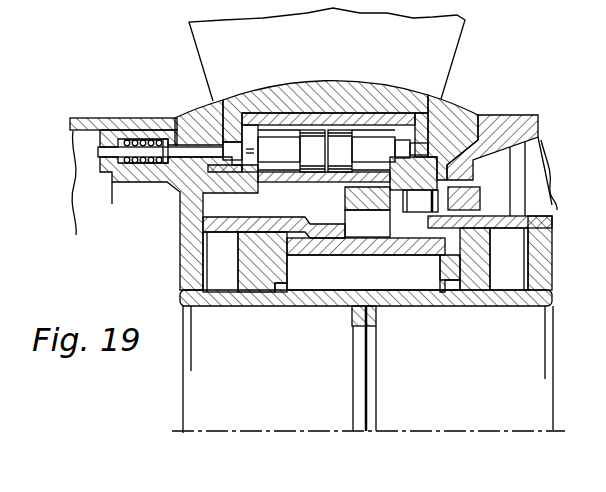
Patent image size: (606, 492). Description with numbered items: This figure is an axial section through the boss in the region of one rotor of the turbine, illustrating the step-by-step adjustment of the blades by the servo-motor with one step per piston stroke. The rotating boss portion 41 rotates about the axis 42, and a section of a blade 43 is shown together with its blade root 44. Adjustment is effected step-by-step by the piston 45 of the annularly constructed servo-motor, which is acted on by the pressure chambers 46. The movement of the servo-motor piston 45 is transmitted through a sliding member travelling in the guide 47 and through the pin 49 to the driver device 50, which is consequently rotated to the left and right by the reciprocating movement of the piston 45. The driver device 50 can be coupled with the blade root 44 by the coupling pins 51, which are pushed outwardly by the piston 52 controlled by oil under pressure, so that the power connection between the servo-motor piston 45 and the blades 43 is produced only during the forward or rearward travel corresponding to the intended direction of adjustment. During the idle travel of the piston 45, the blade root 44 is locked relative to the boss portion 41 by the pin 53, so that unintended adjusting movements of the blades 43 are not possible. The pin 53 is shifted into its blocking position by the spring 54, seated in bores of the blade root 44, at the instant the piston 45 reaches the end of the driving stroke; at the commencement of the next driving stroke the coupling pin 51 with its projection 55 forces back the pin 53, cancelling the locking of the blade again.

The rotating boss portion 41 is at (191, 227).
The axis 42 is at (336, 432).
The blade 43 is at (327, 54).
The blade root 44 is at (334, 116).
The piston 45 is at (447, 255).
The pressure chambers 46 is at (365, 260).
The guide 47 is at (464, 198).
The pin 49 is at (420, 201).
The driver device 50 is at (413, 173).
The coupling pins 51 is at (343, 150).
The piston 52 is at (326, 151).
The pin 53 is at (188, 151).
The spring 54 is at (140, 162).
The projection 55 is at (228, 138).